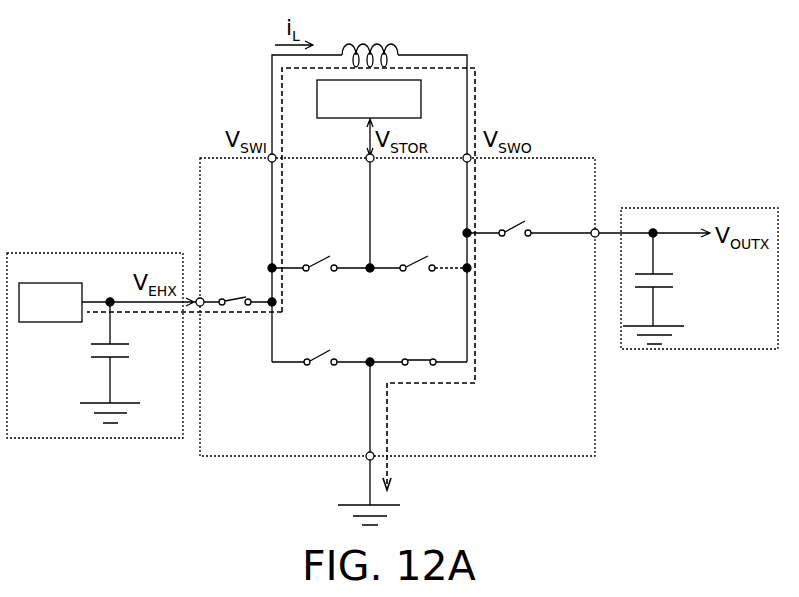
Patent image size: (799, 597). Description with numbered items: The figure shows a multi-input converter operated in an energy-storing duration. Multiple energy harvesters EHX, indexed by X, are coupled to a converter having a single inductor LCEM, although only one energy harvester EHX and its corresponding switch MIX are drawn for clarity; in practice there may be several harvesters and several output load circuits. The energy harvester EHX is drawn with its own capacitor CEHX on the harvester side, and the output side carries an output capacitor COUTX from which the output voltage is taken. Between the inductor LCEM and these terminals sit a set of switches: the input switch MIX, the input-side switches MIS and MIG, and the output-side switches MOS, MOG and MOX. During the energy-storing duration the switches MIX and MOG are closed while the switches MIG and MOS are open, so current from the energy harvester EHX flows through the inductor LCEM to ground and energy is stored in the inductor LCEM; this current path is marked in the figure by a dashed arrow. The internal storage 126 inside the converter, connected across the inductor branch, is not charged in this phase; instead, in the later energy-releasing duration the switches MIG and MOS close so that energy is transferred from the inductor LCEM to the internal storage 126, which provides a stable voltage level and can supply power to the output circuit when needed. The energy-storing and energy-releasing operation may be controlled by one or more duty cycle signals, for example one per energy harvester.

The internal storage 126 is at (421, 98).
The inductor LCEM is at (370, 37).
The energy harvester EHX is at (50, 302).
The harvester capacitor CEHX is at (128, 362).
The output capacitor COUTX is at (678, 288).
The switch MIX is at (238, 287).
The input storage switch MIS is at (321, 249).
The switch MOS is at (418, 249).
The output switch MOX is at (529, 211).
The switch MIG is at (321, 342).
The switch MOG is at (418, 347).